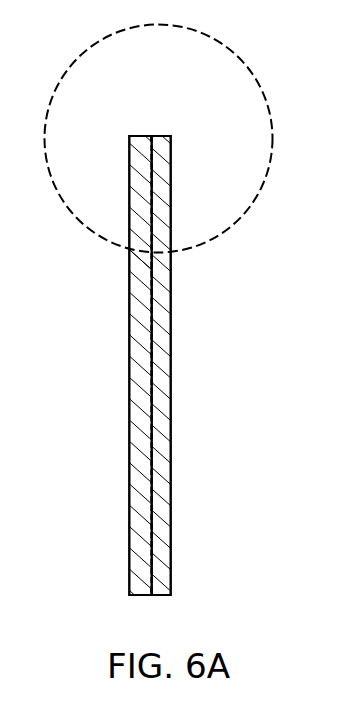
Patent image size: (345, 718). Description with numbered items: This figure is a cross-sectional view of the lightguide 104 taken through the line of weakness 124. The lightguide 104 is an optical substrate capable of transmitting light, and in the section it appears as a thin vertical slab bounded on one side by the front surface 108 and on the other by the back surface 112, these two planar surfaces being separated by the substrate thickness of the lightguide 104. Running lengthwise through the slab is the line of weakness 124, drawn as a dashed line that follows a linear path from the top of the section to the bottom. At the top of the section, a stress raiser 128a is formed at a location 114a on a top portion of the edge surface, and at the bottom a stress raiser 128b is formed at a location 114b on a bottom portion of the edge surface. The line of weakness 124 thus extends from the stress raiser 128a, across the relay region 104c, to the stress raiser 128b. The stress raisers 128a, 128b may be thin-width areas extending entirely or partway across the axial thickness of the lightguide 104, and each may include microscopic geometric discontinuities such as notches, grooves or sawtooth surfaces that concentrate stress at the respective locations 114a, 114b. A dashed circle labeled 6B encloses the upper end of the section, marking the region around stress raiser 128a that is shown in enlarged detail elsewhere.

The detail region shown in FIG. 6B is at (258, 82).
The lightguide 104 is at (129, 431).
The relay region 104c is at (140, 268).
The front surface 108 is at (129, 327).
The back surface 112 is at (171, 383).
The line of weakness 124 is at (151, 480).
The location 114a is at (135, 135).
The location 114b is at (135, 595).
The stress raiser 128a is at (155, 135).
The stress raiser 128b is at (155, 595).